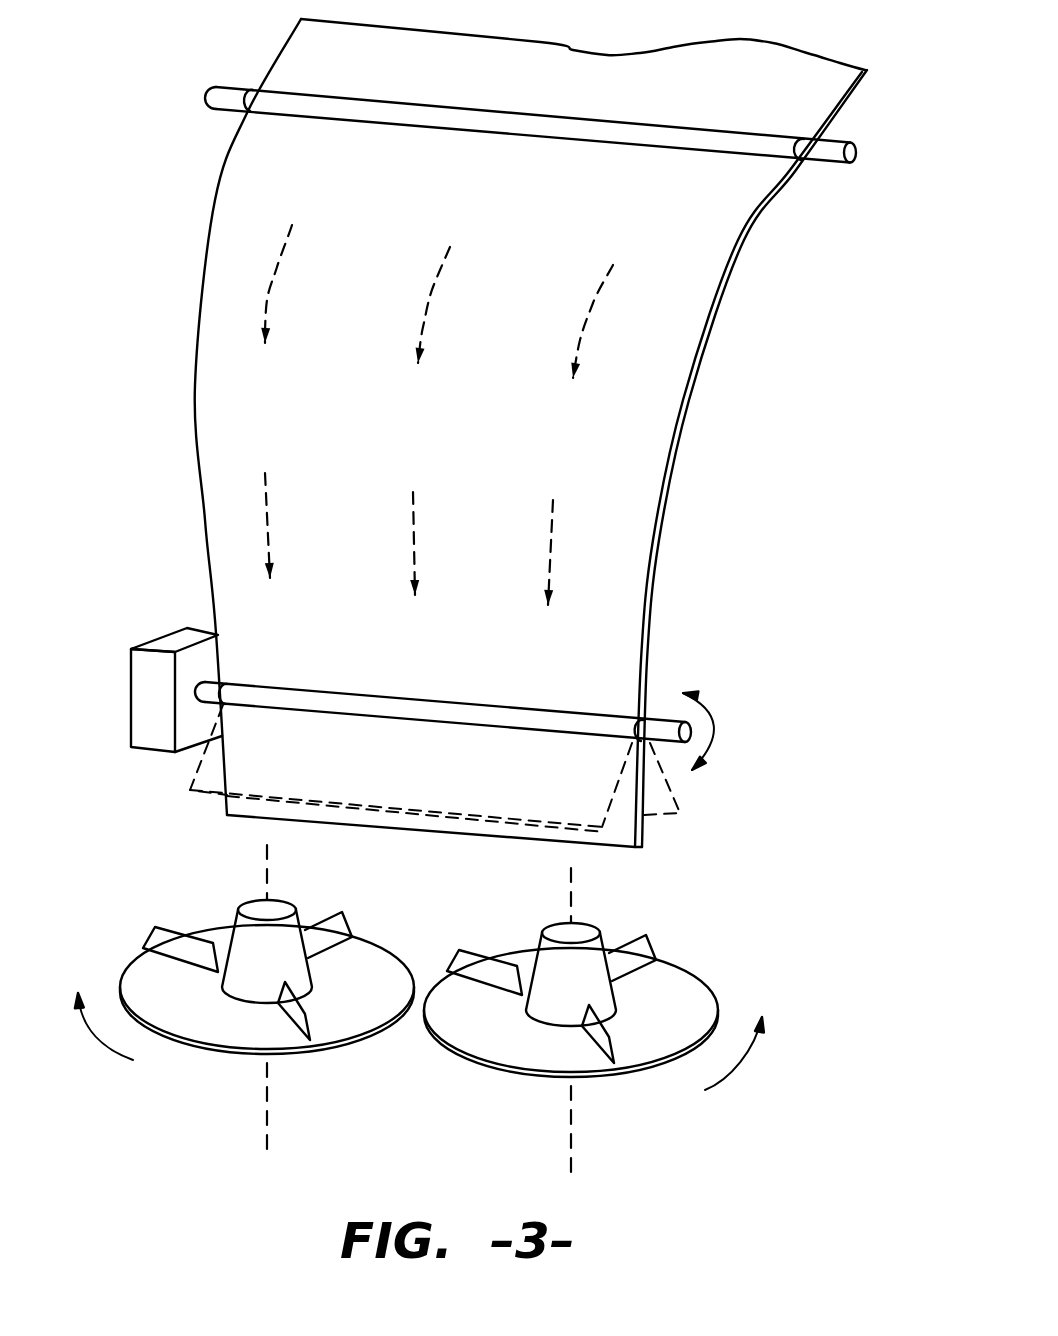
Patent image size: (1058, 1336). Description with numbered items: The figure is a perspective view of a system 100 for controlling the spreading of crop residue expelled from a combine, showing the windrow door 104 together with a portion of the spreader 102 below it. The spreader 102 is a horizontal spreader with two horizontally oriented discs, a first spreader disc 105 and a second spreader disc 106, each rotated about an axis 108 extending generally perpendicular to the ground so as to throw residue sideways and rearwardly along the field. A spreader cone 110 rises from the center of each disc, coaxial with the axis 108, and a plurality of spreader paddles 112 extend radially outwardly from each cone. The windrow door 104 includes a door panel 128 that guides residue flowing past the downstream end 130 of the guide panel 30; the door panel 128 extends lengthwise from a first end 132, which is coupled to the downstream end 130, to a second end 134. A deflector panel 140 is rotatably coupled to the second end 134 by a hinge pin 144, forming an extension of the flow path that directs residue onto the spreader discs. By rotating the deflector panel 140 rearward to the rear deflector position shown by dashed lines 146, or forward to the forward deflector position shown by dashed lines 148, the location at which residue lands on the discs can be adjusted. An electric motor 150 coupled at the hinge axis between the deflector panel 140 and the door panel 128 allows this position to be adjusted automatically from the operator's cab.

The guide panel 30 is at (583, 40).
The system 100 is at (129, 135).
The spreader 102 is at (97, 868).
The windrow door 104 is at (720, 575).
The first spreader disc 105 is at (232, 1015).
The second spreader disc 106 is at (510, 1042).
The axis 108 is at (267, 1107).
The spreader cone 110 is at (242, 943).
The spreader paddles 112 is at (168, 942).
The door panel 128 is at (228, 383).
The downstream end 130 is at (847, 105).
The first end 132 is at (745, 182).
The second end 134 is at (618, 693).
The deflector panel 140 is at (645, 832).
The hinge pin 144 is at (700, 728).
The rear deflector position 146 is at (200, 763).
The forward deflector position 148 is at (677, 793).
The electric motor 150 is at (148, 682).